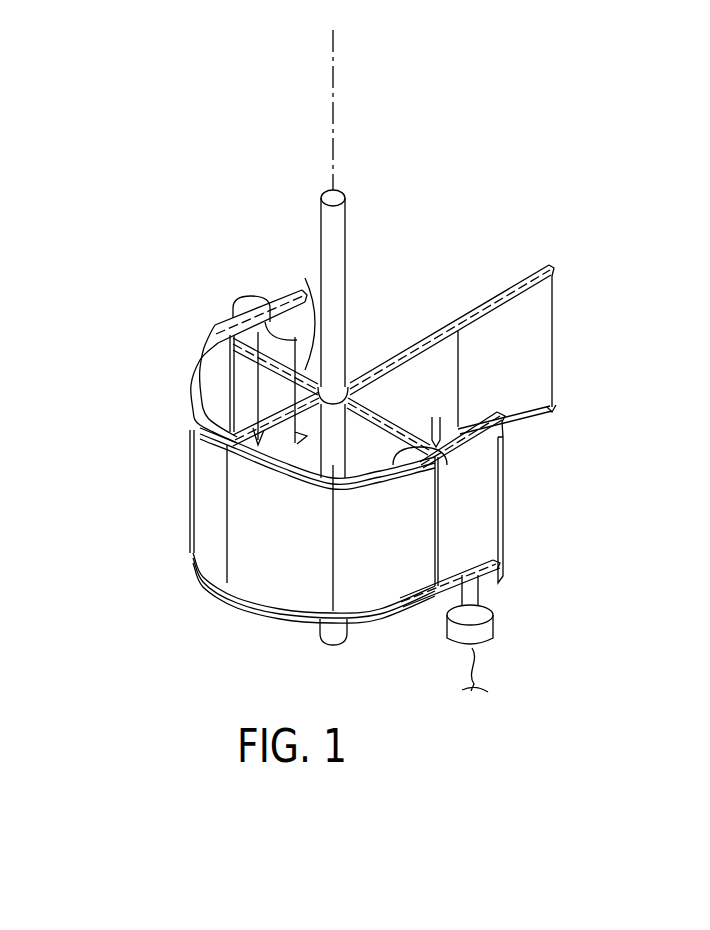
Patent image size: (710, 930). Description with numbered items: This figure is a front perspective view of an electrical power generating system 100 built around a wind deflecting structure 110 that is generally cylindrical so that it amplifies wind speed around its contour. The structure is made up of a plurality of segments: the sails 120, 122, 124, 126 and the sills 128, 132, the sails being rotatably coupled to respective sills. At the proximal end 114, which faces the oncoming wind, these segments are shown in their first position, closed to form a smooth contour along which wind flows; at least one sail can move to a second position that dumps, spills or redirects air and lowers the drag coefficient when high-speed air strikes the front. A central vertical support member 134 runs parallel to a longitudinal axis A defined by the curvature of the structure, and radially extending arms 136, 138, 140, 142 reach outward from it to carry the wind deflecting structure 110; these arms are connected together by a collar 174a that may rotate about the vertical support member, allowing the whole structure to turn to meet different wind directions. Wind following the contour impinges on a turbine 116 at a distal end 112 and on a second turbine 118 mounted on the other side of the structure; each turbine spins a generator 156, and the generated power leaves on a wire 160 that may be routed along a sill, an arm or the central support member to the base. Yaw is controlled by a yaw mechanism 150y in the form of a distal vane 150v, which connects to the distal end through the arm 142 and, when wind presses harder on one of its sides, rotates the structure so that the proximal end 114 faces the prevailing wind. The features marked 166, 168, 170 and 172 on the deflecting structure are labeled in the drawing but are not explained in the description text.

The longitudinal axis A is at (333, 60).
The electrical power generating system 100 is at (562, 193).
The wind deflecting structure 110 is at (280, 590).
The distal end 112 is at (517, 558).
The proximal end 114 is at (229, 605).
The turbine 116 is at (484, 509).
The turbine 118 is at (245, 298).
The sail 120 is at (302, 600).
The sail 122 is at (208, 487).
The sail 124 is at (403, 580).
The sail 126 is at (217, 360).
The sill 128 is at (440, 455).
The sill 132 is at (362, 618).
The central vertical support member 134 is at (340, 230).
The radially extending arm 136 is at (237, 425).
The radially extending arm 138 is at (296, 310).
The radially extending arm 140 is at (370, 408).
The radially extending arm 142 is at (440, 335).
The distal vane 150v is at (530, 335).
The yaw mechanism 150y is at (562, 253).
The electrical generator 156 is at (494, 628).
The wire 160 is at (478, 665).
The band inner edge 166 is at (237, 438).
The band outer edge 168 is at (240, 448).
The slot 170 is at (333, 463).
The hoop 172 is at (193, 390).
The collar 174a is at (354, 372).